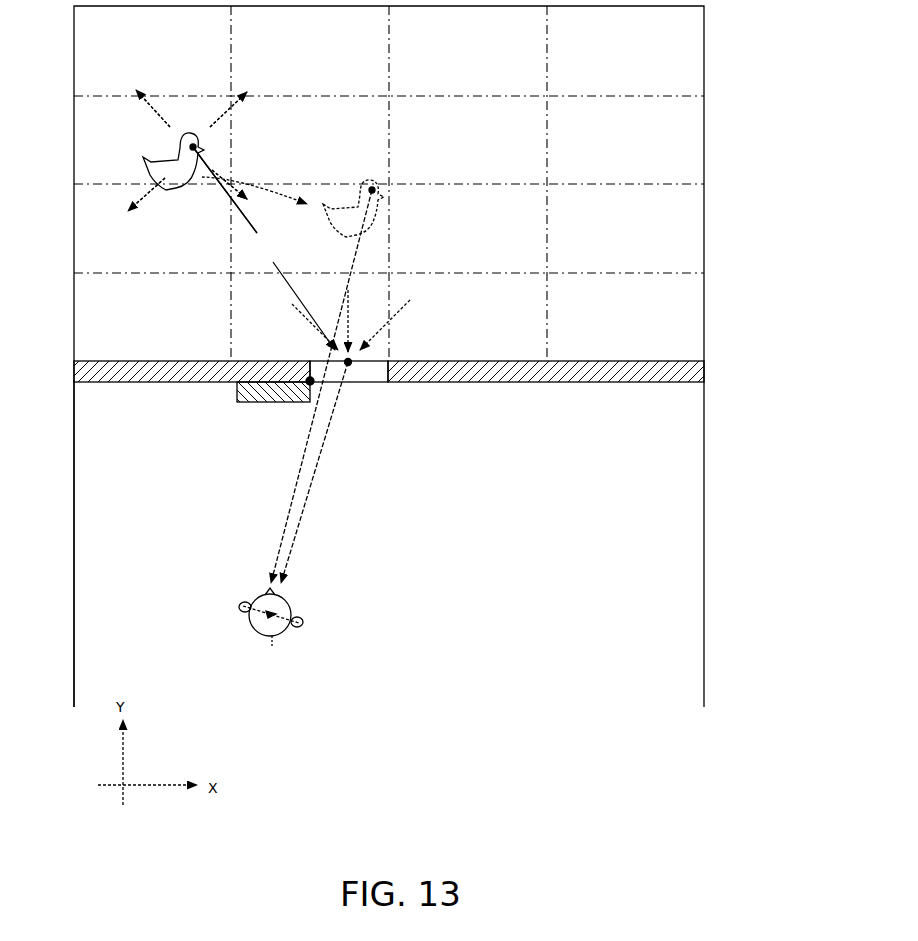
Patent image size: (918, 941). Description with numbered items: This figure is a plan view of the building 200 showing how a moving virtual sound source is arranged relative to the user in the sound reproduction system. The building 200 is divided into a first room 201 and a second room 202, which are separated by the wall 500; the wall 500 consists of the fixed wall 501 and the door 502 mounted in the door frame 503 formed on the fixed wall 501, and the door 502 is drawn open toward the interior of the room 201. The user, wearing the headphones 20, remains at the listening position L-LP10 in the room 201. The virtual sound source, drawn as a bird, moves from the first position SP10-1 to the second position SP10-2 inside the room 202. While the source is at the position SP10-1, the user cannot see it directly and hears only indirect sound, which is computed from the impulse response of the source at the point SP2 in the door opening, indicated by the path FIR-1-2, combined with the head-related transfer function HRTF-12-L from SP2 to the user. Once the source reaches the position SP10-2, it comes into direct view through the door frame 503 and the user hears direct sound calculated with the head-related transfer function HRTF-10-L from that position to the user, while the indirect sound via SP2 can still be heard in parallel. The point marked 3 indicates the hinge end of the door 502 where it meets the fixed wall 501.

The building 200 is at (713, 37).
The room 201 is at (90, 504).
The room 202 is at (688, 130).
The wall 500 is at (389, 421).
The fixed wall 501 is at (185, 385).
The door 502 is at (269, 412).
The door frame 503 is at (371, 373).
The door hinge point 3 is at (307, 378).
The headphones 20 is at (243, 605).
The position SP10(1) of virtual sound source SP10-1 is at (196, 142).
The position SP10(2) of virtual sound source SP10-2 is at (376, 188).
The SP2 point SP2 is at (352, 360).
The FIR filter path 1-2 FIR-1-2 is at (262, 248).
The head related transfer function 10 left HRTF-10-L is at (275, 386).
The head related transfer function 12 left HRTF-12-L is at (341, 472).
The position LP10 of user L L-LP10 is at (288, 669).